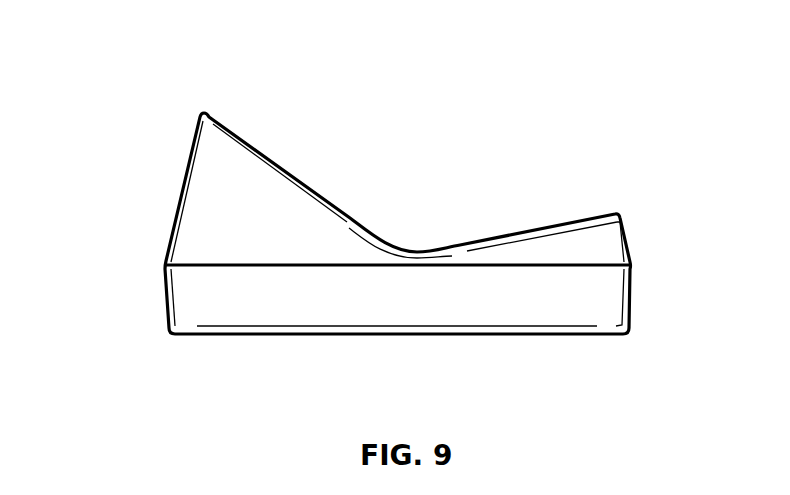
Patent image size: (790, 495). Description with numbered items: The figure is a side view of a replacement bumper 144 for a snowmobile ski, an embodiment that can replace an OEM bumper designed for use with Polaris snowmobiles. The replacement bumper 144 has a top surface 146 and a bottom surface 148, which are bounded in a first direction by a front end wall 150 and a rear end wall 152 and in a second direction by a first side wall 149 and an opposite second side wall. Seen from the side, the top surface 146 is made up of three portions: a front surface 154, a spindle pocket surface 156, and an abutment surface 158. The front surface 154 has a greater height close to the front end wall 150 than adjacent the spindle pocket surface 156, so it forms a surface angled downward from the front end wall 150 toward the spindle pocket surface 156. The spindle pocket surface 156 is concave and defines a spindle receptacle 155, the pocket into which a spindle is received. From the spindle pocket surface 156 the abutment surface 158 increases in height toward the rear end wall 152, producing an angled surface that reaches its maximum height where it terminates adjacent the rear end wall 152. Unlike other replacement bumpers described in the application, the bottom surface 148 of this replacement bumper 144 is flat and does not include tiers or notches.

The replacement bumper 144 is at (190, 58).
The top surface 146 is at (503, 236).
The bottom surface 148 is at (463, 337).
The first side wall 149 is at (257, 242).
The front end wall 150 is at (632, 283).
The rear end wall 152 is at (173, 222).
The front surface 154 is at (582, 220).
The spindle receptacle 155 is at (428, 238).
The spindle pocket surface 156 is at (384, 237).
The abutment surface 158 is at (265, 149).